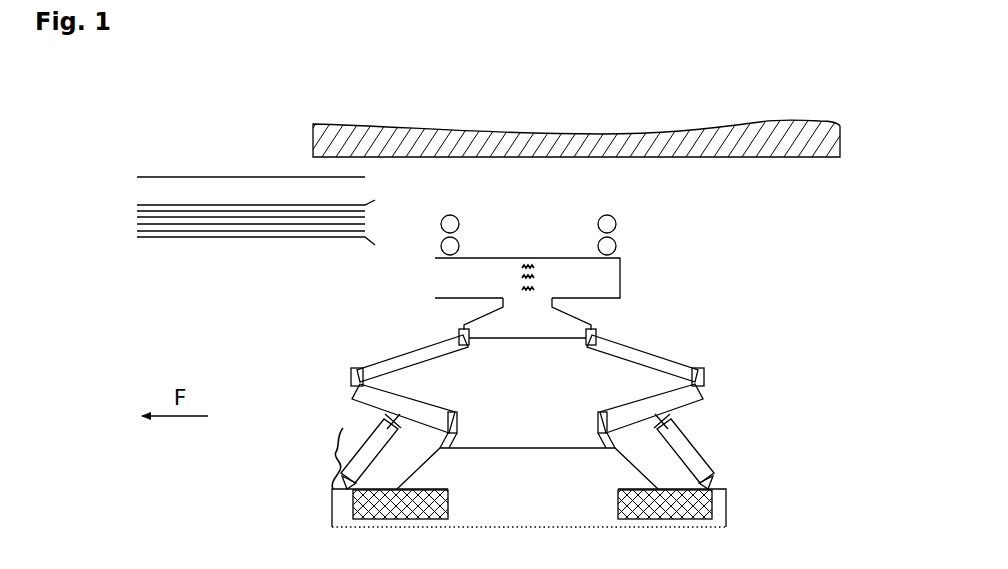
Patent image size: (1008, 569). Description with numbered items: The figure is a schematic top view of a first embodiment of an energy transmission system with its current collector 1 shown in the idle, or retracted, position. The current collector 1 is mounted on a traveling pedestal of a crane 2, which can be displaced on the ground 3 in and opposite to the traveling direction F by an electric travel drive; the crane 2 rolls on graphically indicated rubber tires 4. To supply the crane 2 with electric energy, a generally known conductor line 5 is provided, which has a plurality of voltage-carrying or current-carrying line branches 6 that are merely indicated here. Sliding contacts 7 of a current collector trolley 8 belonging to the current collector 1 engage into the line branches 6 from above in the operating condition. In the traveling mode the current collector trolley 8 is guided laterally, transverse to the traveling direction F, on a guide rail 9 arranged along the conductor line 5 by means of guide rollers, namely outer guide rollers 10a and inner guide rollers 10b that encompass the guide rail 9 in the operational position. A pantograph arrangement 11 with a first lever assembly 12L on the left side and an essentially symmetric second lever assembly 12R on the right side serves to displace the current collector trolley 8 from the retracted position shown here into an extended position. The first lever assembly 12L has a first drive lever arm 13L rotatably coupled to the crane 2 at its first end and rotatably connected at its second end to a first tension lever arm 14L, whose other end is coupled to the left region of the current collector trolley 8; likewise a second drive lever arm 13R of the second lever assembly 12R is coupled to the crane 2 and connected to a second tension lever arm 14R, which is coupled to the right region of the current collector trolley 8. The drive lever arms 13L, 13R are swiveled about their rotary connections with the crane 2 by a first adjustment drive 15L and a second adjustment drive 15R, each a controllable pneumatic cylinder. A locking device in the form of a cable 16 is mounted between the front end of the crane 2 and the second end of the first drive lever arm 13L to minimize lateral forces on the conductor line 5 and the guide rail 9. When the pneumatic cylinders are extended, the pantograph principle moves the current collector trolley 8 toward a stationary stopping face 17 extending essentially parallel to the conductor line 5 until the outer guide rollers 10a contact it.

The current collector 1 is at (812, 335).
The crane 2 is at (527, 479).
The ground 3 is at (587, 491).
The rubber tires 4 is at (712, 507).
The conductor line 5 is at (170, 156).
The line branches 6 is at (180, 225).
The sliding contacts 7 is at (528, 298).
The current collector trolley 8 is at (620, 278).
The guide rail 9 is at (270, 177).
The outer guide rollers 10a is at (598, 222).
The inner guide rollers 10b is at (598, 246).
The pantograph arrangement 11 is at (692, 345).
The first lever assembly 12L is at (372, 363).
The second lever assembly 12R is at (695, 360).
The first drive lever arm 13L is at (357, 383).
The second drive lever arm 13R is at (707, 390).
The first tension lever arm 14L is at (395, 358).
The second tension lever arm 14R is at (660, 358).
The first adjustment drive 15L is at (338, 447).
The second adjustment drive 15R is at (710, 460).
The cable 16 is at (343, 428).
The stopping face 17 is at (826, 157).